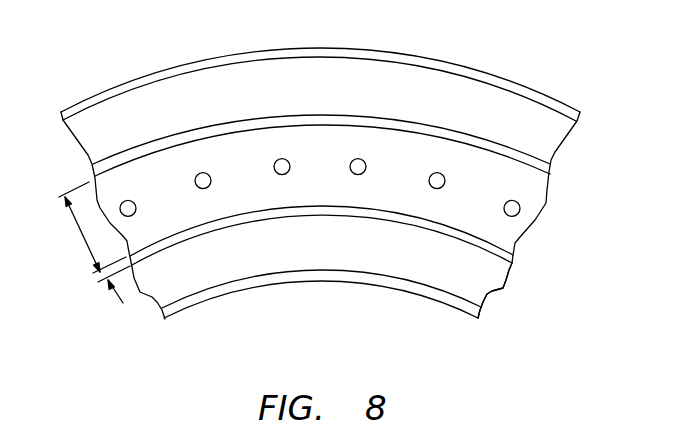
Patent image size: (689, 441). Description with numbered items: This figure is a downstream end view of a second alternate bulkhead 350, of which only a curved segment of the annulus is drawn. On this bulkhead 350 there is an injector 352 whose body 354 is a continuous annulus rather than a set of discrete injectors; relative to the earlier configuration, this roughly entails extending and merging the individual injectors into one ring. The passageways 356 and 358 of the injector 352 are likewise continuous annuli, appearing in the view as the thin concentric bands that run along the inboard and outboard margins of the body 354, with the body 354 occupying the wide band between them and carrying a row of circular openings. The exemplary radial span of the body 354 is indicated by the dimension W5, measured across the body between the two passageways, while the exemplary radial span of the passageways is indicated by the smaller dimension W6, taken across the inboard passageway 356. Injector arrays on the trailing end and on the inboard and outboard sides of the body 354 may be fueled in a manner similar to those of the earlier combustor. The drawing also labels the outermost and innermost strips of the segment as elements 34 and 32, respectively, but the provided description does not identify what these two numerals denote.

The inner edge strip 32 is at (452, 304).
The outer edge strip 34 is at (523, 91).
The bulkhead 350 is at (478, 280).
The injector 352 is at (558, 200).
The body 354 is at (528, 209).
The passageway 356 is at (513, 259).
The passageway 358 is at (553, 170).
The radial span of the body W5 is at (84, 234).
The radial span of the passageways W6 is at (108, 275).